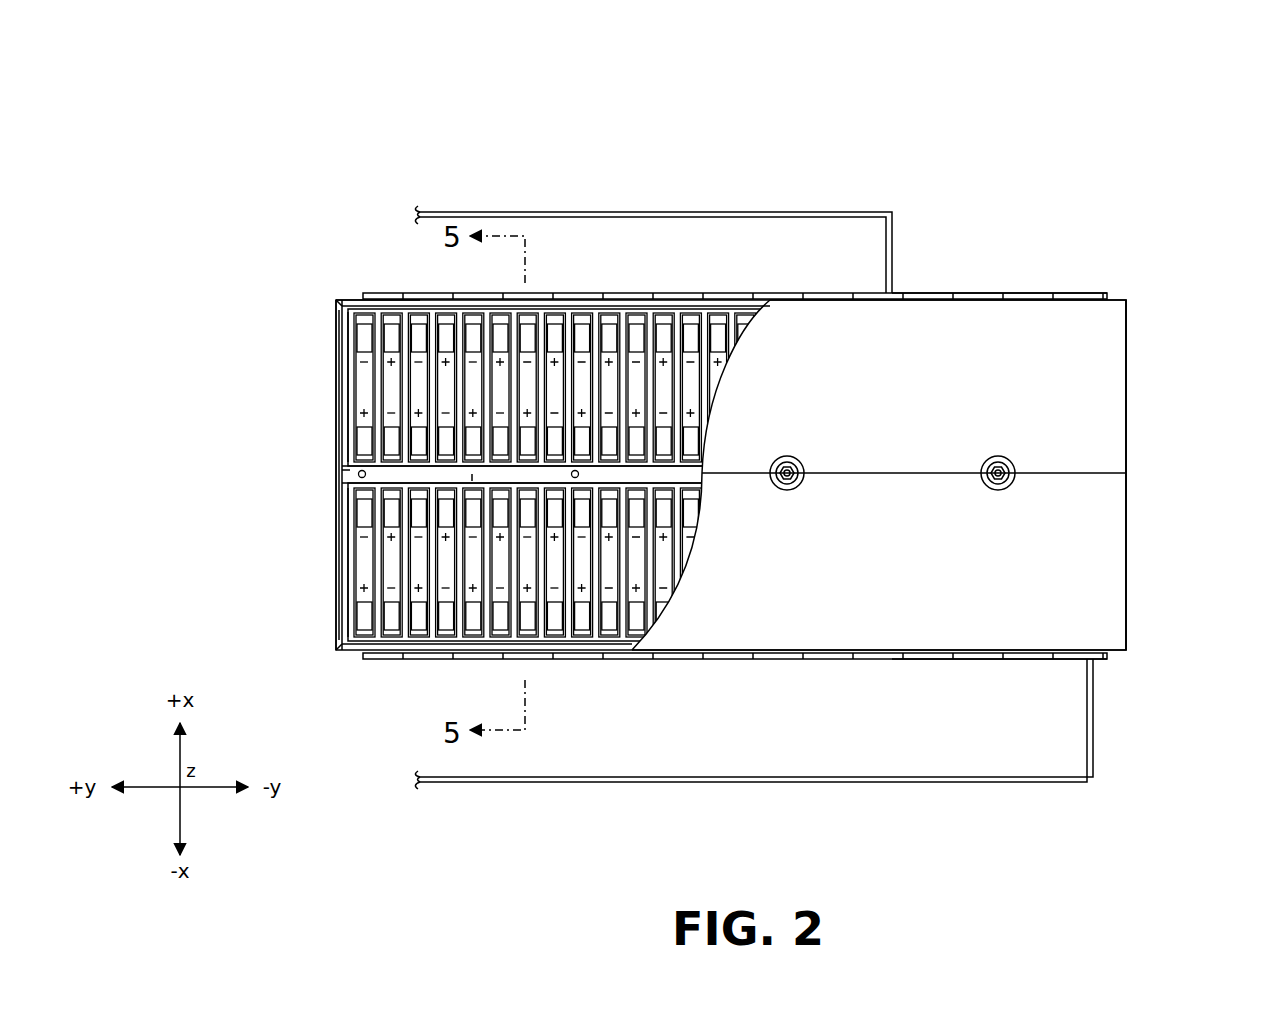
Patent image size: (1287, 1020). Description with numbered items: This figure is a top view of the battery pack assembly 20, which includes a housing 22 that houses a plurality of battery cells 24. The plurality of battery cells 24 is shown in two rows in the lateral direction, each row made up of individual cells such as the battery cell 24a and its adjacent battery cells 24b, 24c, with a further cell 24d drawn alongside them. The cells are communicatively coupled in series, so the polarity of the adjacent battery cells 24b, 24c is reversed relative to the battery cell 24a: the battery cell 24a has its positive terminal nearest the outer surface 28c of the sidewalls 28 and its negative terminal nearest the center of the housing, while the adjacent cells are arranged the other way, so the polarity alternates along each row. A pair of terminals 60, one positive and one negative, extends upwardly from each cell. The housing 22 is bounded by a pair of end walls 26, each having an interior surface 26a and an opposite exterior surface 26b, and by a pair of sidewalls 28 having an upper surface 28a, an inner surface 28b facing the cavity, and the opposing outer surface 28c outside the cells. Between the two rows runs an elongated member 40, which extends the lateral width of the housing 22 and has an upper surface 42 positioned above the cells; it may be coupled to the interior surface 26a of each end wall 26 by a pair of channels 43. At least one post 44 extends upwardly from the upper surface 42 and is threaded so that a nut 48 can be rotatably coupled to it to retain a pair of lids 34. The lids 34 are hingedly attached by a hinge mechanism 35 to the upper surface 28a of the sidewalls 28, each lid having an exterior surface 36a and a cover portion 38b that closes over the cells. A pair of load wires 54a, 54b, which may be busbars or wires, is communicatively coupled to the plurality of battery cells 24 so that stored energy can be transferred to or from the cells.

The battery pack assembly 20 is at (1208, 102).
The housing 22 is at (1128, 843).
The plurality of battery cells 24 is at (559, 532).
The battery cell 24a is at (528, 568).
The adjacent battery cell 24b is at (505, 570).
The adjacent battery cell 24c is at (547, 568).
The battery cell 24d is at (583, 568).
The end walls 26 is at (312, 386).
The interior surface 26a is at (335, 301).
The exterior surface 26b is at (335, 345).
The sidewalls 28 is at (357, 298).
The upper surface 28a is at (440, 300).
The inner surface 28b is at (404, 324).
The outer surface 28c is at (343, 299).
The lids 34 is at (1160, 378).
The hinge mechanism 35 is at (1040, 294).
The exterior surface 36a is at (950, 461).
The cover portion 38b is at (1105, 325).
The elongated member 40 is at (418, 470).
The upper surface 42 is at (470, 472).
The channels 43 is at (336, 472).
The post 44 is at (362, 479).
The nut 48 is at (787, 491).
The load wire 54a is at (876, 783).
The load wire 54b is at (700, 212).
The terminals 60 is at (332, 318).